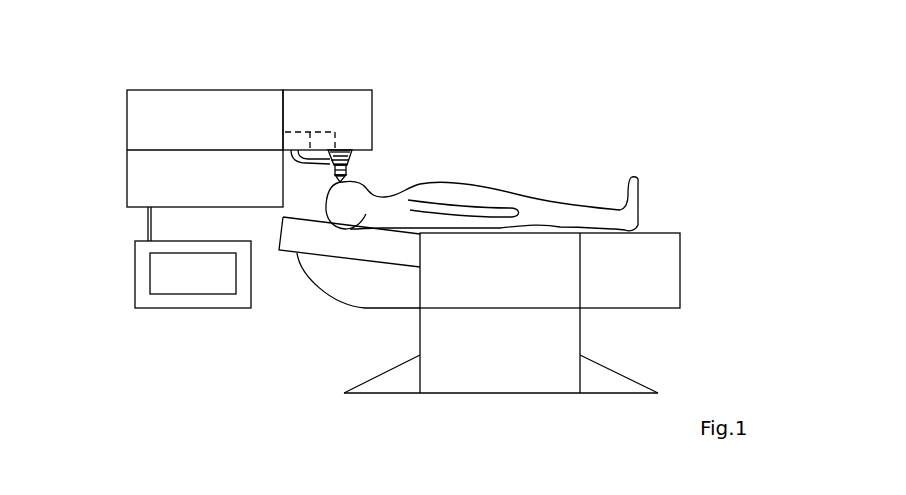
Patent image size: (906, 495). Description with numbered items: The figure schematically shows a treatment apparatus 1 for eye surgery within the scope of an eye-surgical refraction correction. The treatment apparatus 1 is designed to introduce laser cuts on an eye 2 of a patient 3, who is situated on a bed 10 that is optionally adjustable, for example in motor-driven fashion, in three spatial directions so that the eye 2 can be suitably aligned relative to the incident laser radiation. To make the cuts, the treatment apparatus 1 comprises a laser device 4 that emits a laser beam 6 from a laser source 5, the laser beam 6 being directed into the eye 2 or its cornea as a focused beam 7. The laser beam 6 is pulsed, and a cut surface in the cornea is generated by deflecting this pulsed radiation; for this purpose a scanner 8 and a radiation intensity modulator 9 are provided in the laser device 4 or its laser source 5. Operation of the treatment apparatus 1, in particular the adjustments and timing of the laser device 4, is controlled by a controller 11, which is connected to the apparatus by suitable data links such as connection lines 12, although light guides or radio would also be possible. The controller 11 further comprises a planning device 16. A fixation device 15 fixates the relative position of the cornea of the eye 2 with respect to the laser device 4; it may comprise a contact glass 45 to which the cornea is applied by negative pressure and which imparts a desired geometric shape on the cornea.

The treatment apparatus 1 is at (580, 103).
The eye 2 is at (340, 180).
The patient 3 is at (632, 205).
The laser device 4 is at (148, 98).
The laser source 5 is at (320, 95).
The laser beam 6 is at (372, 155).
The focused beam 7 is at (352, 166).
The scanner 8 is at (336, 132).
The radiation intensity modulator 9 is at (297, 130).
The bed 10 is at (678, 252).
The controller 11 is at (170, 308).
The connection lines 12 is at (147, 223).
The fixation device 15 is at (320, 167).
The planning device 16 is at (157, 280).
The contact glass 45 is at (345, 175).